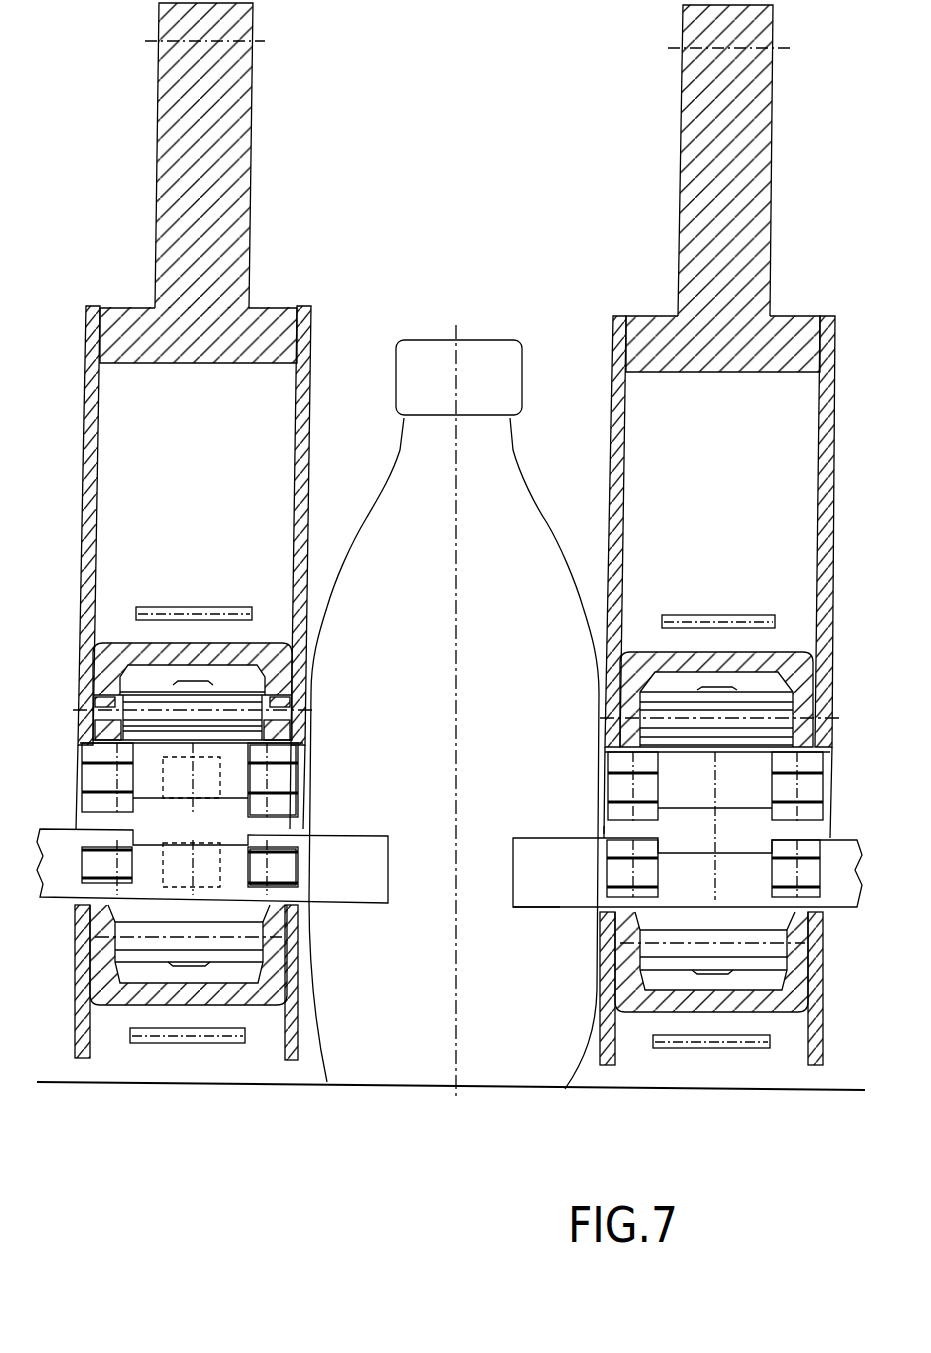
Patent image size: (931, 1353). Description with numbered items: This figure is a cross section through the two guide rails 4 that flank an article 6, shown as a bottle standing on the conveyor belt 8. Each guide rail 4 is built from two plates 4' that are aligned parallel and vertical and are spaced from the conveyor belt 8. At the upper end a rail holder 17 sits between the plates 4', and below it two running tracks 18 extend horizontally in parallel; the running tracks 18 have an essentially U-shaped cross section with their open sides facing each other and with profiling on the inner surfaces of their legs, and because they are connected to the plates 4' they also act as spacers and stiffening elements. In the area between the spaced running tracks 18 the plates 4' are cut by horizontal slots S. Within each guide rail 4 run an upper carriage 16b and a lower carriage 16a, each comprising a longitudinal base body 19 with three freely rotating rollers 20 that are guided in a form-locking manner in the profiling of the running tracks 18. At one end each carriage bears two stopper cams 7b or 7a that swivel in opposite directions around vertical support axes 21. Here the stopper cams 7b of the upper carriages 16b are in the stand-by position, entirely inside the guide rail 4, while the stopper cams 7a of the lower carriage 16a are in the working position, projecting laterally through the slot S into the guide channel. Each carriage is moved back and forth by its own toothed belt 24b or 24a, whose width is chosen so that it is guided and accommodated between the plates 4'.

The rail holder 17 is at (237, 125).
The guide rail 4 is at (460, 310).
The plate 4' is at (455, 685).
The article 6 is at (427, 355).
The toothed belt 24b is at (198, 612).
The toothed belt 24a is at (190, 1045).
The running track 18 is at (639, 652).
The roller 20 is at (760, 703).
The stopper cam 7b is at (291, 757).
The vertical support axis 21 is at (268, 773).
The stopper cam 7a is at (528, 892).
The upper carriage 16b is at (603, 781).
The horizontal slot S is at (603, 829).
The longitudinal base body 19 is at (737, 790).
The lower carriage 16a is at (588, 912).
The conveyor belt 8 is at (298, 1084).